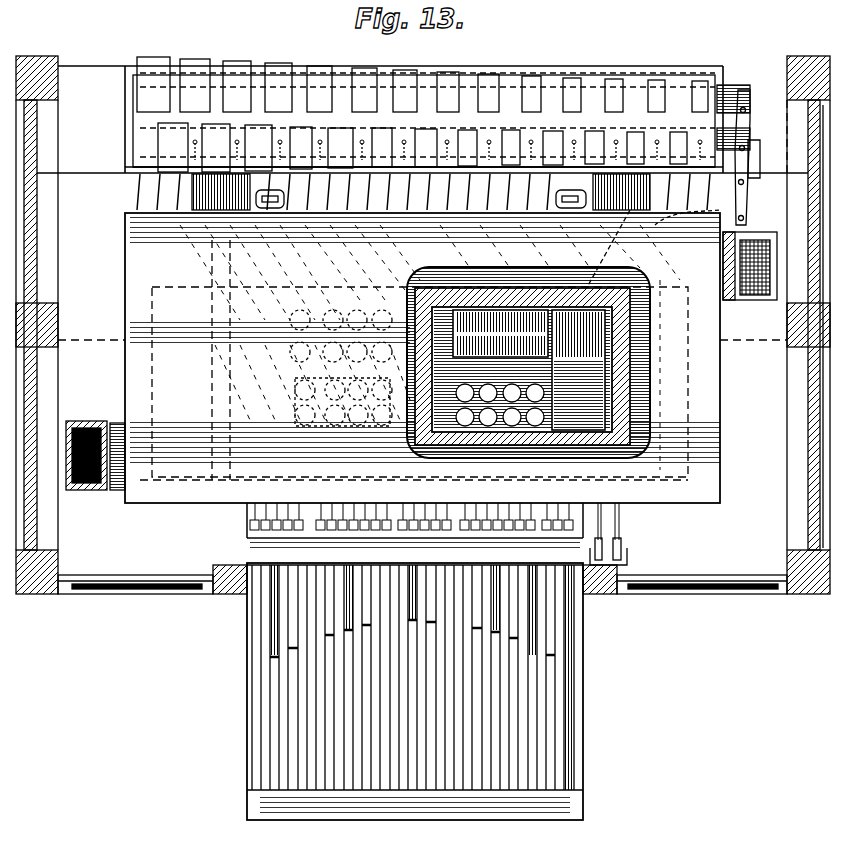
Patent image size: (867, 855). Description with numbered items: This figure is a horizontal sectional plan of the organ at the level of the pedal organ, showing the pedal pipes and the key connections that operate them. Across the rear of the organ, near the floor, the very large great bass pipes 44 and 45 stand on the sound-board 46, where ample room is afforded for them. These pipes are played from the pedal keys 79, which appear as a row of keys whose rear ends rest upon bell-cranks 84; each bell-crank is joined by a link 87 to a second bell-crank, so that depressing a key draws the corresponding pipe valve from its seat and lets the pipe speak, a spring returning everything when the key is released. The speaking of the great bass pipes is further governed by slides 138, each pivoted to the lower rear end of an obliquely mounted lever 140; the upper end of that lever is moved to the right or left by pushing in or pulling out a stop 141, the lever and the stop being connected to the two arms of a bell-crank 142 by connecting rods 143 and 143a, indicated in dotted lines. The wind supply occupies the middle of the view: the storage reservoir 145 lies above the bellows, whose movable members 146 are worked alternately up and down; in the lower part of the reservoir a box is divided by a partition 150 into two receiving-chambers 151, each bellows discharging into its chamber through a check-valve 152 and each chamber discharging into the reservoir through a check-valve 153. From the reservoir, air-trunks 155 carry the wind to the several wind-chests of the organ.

The great bass pipes 44 is at (640, 140).
The great bass pipes 45 is at (172, 88).
The sound-board 46 is at (424, 138).
The pedal keys 79 is at (345, 788).
The bell-crank 84 is at (300, 500).
The link 87 is at (185, 190).
The slides 138 is at (95, 138).
The lever 140 is at (750, 150).
The stop 141 is at (617, 542).
The bell-crank 142 is at (620, 230).
The connecting rod 143 is at (605, 530).
The connecting rod 143a is at (700, 215).
The storage reservoir 145 is at (198, 300).
The movable members of the bellows 146 is at (578, 370).
The partition 150 is at (528, 362).
The receiving-chambers 151 is at (320, 344).
The check-valve 152 is at (500, 333).
The check-valve 153 is at (343, 402).
The air-trunks 155 is at (736, 304).